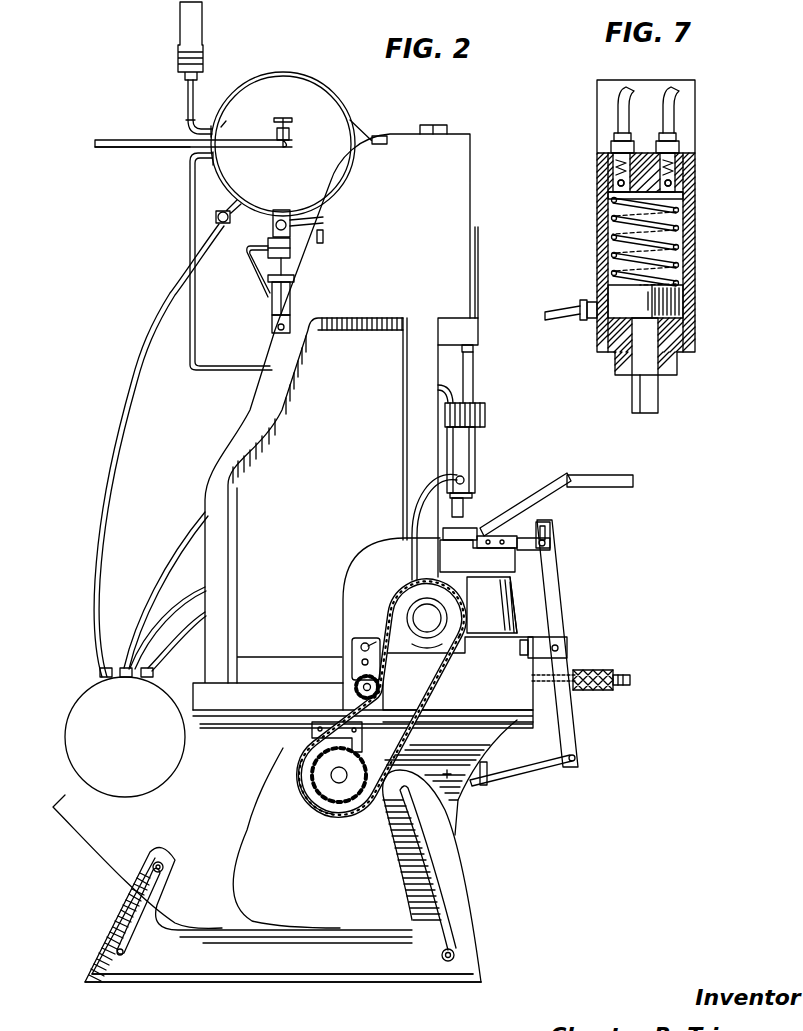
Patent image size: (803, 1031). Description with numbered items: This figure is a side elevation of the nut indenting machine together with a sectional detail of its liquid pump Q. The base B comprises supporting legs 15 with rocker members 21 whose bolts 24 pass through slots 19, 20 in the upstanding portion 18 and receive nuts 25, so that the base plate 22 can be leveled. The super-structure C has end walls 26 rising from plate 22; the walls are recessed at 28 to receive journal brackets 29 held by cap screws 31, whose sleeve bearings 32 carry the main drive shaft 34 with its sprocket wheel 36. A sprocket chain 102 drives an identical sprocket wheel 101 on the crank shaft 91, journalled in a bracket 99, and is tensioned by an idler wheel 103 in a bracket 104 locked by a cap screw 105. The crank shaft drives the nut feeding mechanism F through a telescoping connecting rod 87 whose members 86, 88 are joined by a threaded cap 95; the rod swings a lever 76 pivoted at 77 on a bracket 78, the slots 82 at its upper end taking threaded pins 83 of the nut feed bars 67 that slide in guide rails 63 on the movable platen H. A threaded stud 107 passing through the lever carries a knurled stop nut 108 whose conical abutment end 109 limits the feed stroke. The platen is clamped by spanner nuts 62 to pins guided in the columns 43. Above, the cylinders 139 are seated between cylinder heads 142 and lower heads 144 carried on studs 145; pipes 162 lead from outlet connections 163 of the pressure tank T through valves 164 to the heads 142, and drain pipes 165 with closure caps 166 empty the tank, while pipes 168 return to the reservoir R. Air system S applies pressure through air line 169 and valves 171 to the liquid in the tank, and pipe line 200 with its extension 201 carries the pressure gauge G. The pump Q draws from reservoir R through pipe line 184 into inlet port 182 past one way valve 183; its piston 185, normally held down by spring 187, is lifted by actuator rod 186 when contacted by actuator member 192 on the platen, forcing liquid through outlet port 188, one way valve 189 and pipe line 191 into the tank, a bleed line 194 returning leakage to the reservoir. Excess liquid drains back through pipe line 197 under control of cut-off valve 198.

In FIG. 2, the pressure gauge G is at (180, 35).
In FIG. 2, the pressure tank T is at (286, 74).
In FIG. 2, the pipe line 200 is at (243, 115).
In FIG. 2, the upwardly extending extension 201 is at (188, 100).
In FIG. 2, the air system S is at (115, 136).
In FIG. 2, the air line 169 is at (172, 148).
In FIG. 2, the valves 171 is at (292, 134).
In FIG. 2, the cut-off valve 198 is at (215, 216).
In FIG. 2, the pipe line 197 is at (128, 398).
In FIG. 2, the pipe line 191 is at (190, 240).
In FIG. 7, the pipe line 191 is at (618, 118).
In FIG. 2, the valves 164 is at (284, 212).
In FIG. 2, the outlet connections 163 is at (292, 248).
In FIG. 2, the pipes 162 is at (248, 256).
In FIG. 2, the drain pipes 165 is at (270, 298).
In FIG. 2, the closure caps 166 is at (272, 328).
In FIG. 2, the supporting super-structure C is at (225, 442).
In FIG. 2, the end walls 26 is at (289, 570).
In FIG. 2, the cylinder heads 142 is at (465, 330).
In FIG. 2, the cylinders 139 is at (455, 365).
In FIG. 2, the studs 145 is at (474, 390).
In FIG. 2, the cylinder heads 144 is at (486, 415).
In FIG. 2, the liquid pump Q is at (485, 459).
In FIG. 7, the liquid pump Q is at (704, 209).
In FIG. 2, the actuator rod 186 is at (452, 508).
In FIG. 7, the actuator rod 186 is at (660, 402).
In FIG. 2, the guide rails 63 is at (445, 542).
In FIG. 2, the actuator member 192 is at (460, 530).
In FIG. 2, the spanner nuts 62 is at (477, 556).
In FIG. 2, the movable platen H is at (525, 567).
In FIG. 2, the threaded pins 83 is at (552, 541).
In FIG. 2, the slots 82 is at (550, 526).
In FIG. 2, the nut feed bars 67 is at (554, 547).
In FIG. 2, the lever 76 is at (584, 726).
In FIG. 2, the member 86 is at (572, 762).
In FIG. 2, the nut feeding mechanism F is at (587, 470).
In FIG. 2, the cap screws 31 is at (490, 625).
In FIG. 2, the upstanding columns 43 is at (512, 600).
In FIG. 2, the pivot 77 is at (567, 640).
In FIG. 2, the bracket 78 is at (560, 650).
In FIG. 2, the conical abutment end 109 is at (578, 675).
In FIG. 2, the stop nut 108 is at (610, 668).
In FIG. 2, the threaded stud 107 is at (630, 680).
In FIG. 2, the journal brackets 29 is at (512, 648).
In FIG. 2, the base plate 22 is at (470, 715).
In FIG. 2, the sprocket chain 102 is at (432, 716).
In FIG. 2, the recesses 28 is at (405, 583).
In FIG. 2, the sprocket wheel 36 is at (430, 650).
In FIG. 2, the main drive shaft 34 is at (427, 618).
In FIG. 2, the sleeve bearings 32 is at (443, 648).
In FIG. 2, the idler wheel 103 is at (354, 690).
In FIG. 2, the bracket 104 is at (352, 660).
In FIG. 2, the cap screw 105 is at (362, 644).
In FIG. 2, the crank shaft 91 is at (339, 775).
In FIG. 2, the bracket 99 is at (312, 730).
In FIG. 2, the sprocket wheel 101 is at (325, 792).
In FIG. 2, the rocker members 21 is at (237, 830).
In FIG. 2, the fluid reservoir R is at (75, 700).
In FIG. 2, the pipe line 184 is at (181, 530).
In FIG. 7, the pipe line 184 is at (680, 100).
In FIG. 2, the bleed line 194 is at (162, 606).
In FIG. 7, the bleed line 194 is at (559, 318).
In FIG. 2, the pipes 168 is at (177, 647).
In FIG. 2, the threaded cap 95 is at (492, 770).
In FIG. 2, the telescoping connecting rod 87 is at (522, 785).
In FIG. 2, the member 88 is at (437, 772).
In FIG. 2, the base B is at (473, 845).
In FIG. 2, the upwardly extending portion 18 is at (140, 885).
In FIG. 2, the nuts 25 is at (156, 862).
In FIG. 2, the bolts 24 is at (165, 863).
In FIG. 2, the slot 20 is at (127, 940).
In FIG. 2, the slot 19 is at (440, 898).
In FIG. 2, the supporting legs 15 is at (193, 972).
In FIG. 7, the one way valve 183 is at (672, 178).
In FIG. 7, the inlet port 182 is at (682, 187).
In FIG. 7, the one way valve 189 is at (618, 175).
In FIG. 7, the outlet port 188 is at (617, 187).
In FIG. 7, the spring 187 is at (684, 243).
In FIG. 7, the piston 185 is at (675, 308).